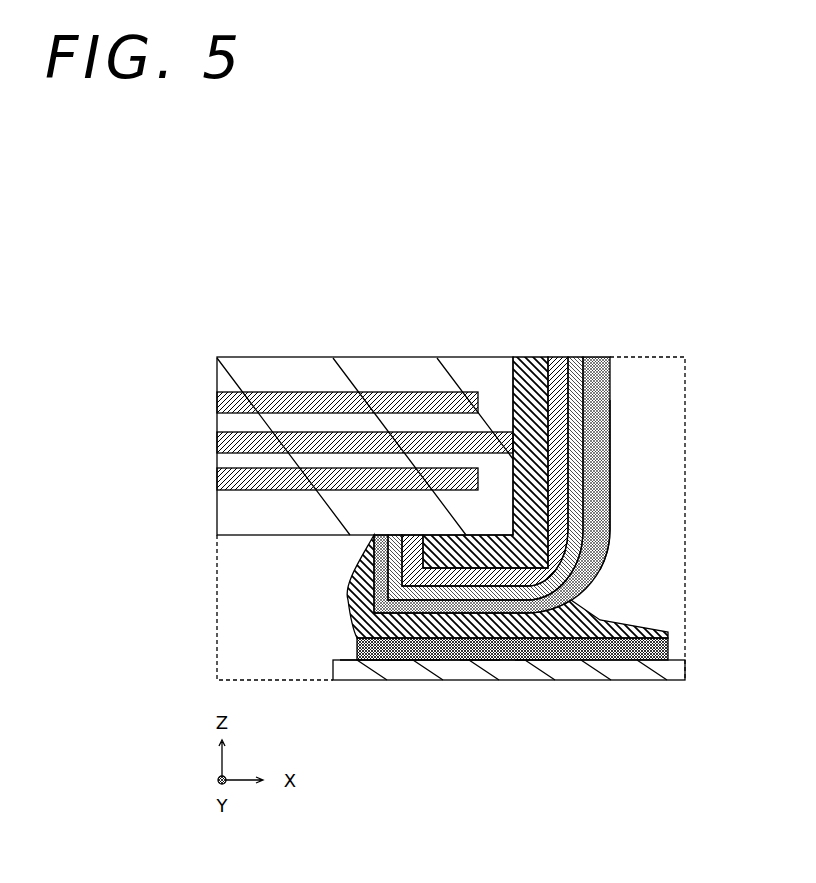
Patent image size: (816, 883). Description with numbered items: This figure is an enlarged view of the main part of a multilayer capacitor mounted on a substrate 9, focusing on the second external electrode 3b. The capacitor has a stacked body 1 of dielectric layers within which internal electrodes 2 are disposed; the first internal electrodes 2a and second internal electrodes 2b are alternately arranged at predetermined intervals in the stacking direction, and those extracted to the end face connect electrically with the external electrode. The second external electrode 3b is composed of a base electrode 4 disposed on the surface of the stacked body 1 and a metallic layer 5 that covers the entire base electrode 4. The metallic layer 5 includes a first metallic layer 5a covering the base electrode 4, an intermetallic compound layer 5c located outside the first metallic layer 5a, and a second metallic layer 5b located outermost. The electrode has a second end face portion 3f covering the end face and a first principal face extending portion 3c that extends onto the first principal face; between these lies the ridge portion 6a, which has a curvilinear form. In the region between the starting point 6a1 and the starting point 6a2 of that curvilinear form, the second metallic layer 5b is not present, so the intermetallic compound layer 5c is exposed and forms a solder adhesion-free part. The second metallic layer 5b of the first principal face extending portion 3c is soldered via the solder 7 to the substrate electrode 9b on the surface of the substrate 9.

The stacked body 1 is at (415, 367).
The internal electrodes 2 is at (365, 385).
The first internal electrode 2a is at (353, 391).
The second internal electrode 2b is at (316, 440).
The second external electrode 3b is at (610, 477).
The first principal face extending portion 3c is at (480, 665).
The second end face portion 3f is at (610, 443).
The base electrode 4 is at (520, 362).
The metallic layer 5 is at (512, 445).
The first metallic layer 5a is at (555, 362).
The second metallic layer 5b is at (548, 310).
The intermetallic compound layer 5c is at (578, 362).
The ridge portion 6a is at (617, 663).
The starting point 6a1 is at (608, 525).
The starting point 6a2 is at (533, 660).
The solder 7 is at (580, 663).
The substrate 9 is at (393, 669).
The substrate electrode 9b is at (415, 666).